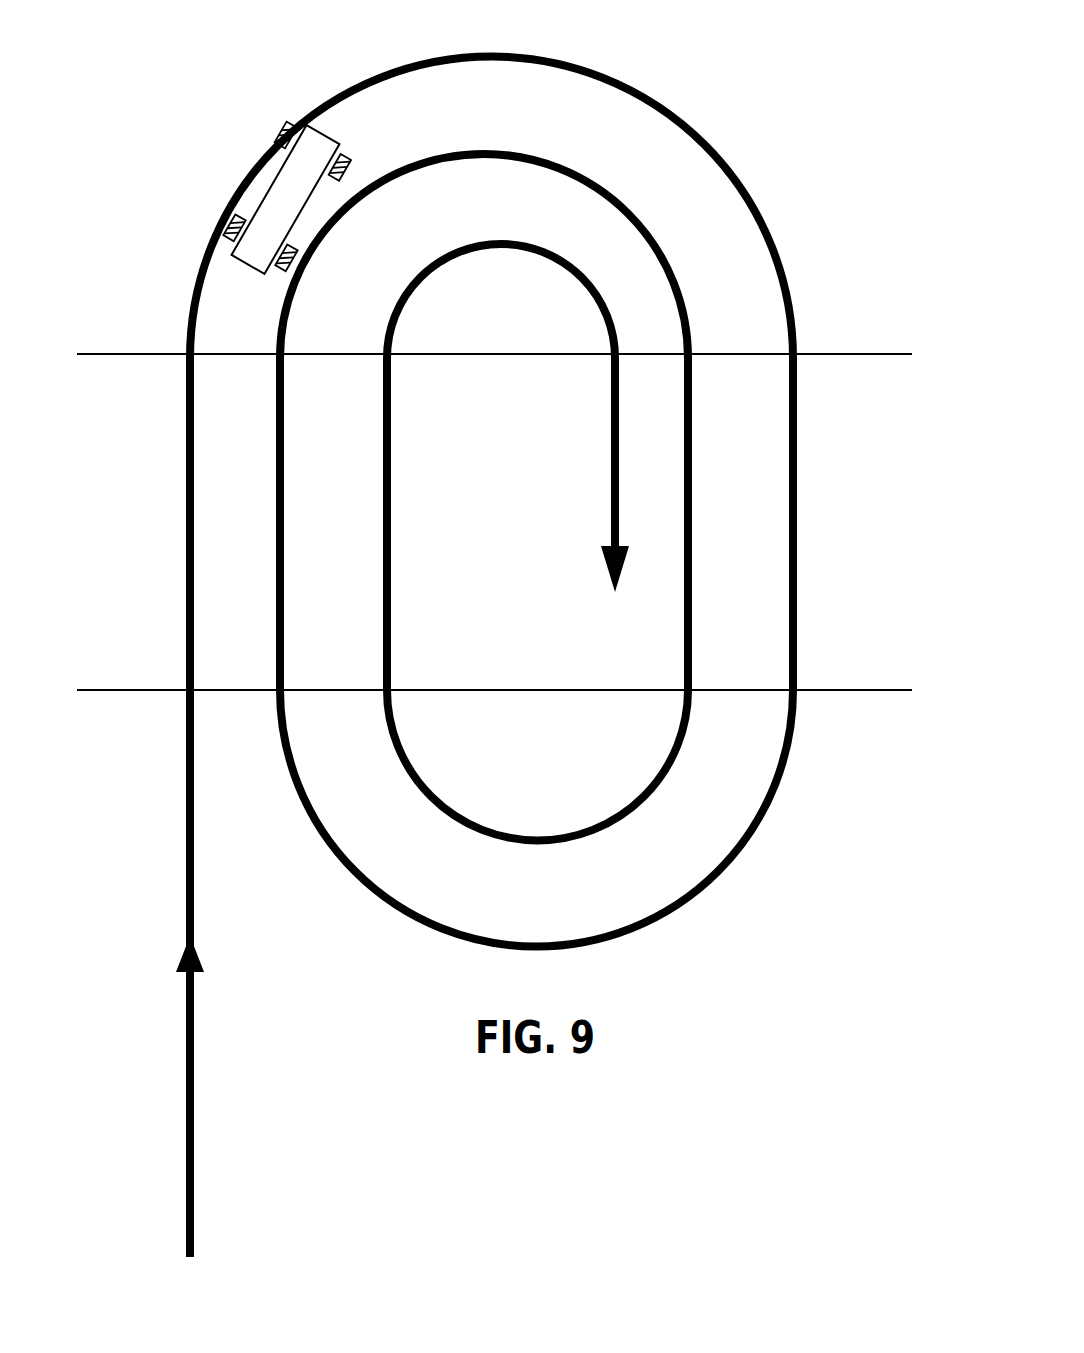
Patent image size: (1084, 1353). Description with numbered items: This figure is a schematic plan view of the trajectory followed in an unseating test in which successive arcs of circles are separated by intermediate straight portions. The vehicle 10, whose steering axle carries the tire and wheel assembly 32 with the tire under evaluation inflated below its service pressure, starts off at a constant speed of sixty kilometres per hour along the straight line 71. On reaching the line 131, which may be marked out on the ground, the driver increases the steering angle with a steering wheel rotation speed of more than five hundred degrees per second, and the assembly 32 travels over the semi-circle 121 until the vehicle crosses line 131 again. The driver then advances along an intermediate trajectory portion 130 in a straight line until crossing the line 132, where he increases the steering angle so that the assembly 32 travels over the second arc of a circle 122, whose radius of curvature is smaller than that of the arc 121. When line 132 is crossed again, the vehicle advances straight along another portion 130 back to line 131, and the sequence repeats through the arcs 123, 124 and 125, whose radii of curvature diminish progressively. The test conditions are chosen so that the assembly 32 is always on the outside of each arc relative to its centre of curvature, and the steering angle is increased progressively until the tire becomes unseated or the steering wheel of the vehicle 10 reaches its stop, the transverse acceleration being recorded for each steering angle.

The vehicle 10 is at (301, 218).
The tire and wheel assembly 32 is at (262, 129).
The straight line 71 is at (185, 1045).
The semi-circle 121 is at (582, 65).
The second arc of a circle 122 is at (705, 885).
The arc of a circle 123 is at (570, 167).
The arc of a circle 124 is at (653, 793).
The arc of a circle 125 is at (508, 244).
The intermediate trajectory portion 130 is at (277, 403).
The line 131 is at (828, 354).
The line 132 is at (823, 690).